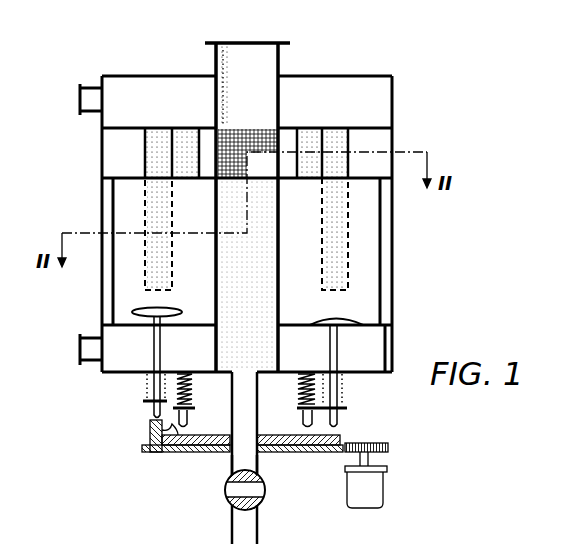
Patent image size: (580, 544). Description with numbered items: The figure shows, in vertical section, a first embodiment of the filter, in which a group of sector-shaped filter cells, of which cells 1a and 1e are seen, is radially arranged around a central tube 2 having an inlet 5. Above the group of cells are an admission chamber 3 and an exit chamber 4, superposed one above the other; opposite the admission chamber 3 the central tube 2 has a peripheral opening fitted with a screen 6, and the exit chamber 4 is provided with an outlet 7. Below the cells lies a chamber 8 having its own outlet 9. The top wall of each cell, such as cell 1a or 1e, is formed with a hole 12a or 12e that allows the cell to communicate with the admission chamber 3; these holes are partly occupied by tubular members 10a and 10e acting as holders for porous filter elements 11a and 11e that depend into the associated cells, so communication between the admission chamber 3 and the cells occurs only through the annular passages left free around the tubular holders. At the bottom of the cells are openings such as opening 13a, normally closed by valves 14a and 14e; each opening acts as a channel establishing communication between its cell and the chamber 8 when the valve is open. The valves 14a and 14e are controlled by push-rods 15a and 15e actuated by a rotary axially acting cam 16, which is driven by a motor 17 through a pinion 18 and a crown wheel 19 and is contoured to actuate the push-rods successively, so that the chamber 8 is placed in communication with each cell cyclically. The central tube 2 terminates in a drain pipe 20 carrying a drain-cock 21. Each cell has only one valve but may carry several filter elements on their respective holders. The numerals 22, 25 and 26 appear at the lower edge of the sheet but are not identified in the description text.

The sector-shaped filter cell 1a is at (108, 216).
The sector-shaped filter cell 1e is at (385, 221).
The central tube 2 is at (248, 362).
The admission chamber 3 is at (115, 146).
The exit chamber 4 is at (340, 80).
The inlet 5 is at (248, 50).
The screen 6 is at (240, 140).
The outlet 7 is at (85, 99).
The chamber 8 is at (113, 368).
The outlet 9 is at (85, 350).
The tubular member 10a is at (158, 135).
The tubular member 10e is at (332, 135).
The porous filter element 11a is at (152, 270).
The porous filter element 11e is at (345, 268).
The hole 12a is at (145, 180).
The hole 12e is at (350, 181).
The opening 13a is at (169, 329).
The valve 14a is at (140, 310).
The valve 14e is at (360, 318).
The push-rod 15a is at (153, 351).
The push-rod 15e is at (338, 349).
The rotary axially acting cam 16 is at (150, 430).
The motor 17 is at (380, 489).
The pinion 18 is at (378, 443).
The crown wheel 19 is at (163, 454).
The drain pipe 20 is at (252, 462).
The drain-cock 21 is at (227, 500).
The lower element 22 is at (306, 540).
The lower element 25 is at (360, 543).
The lower element 26 is at (443, 535).